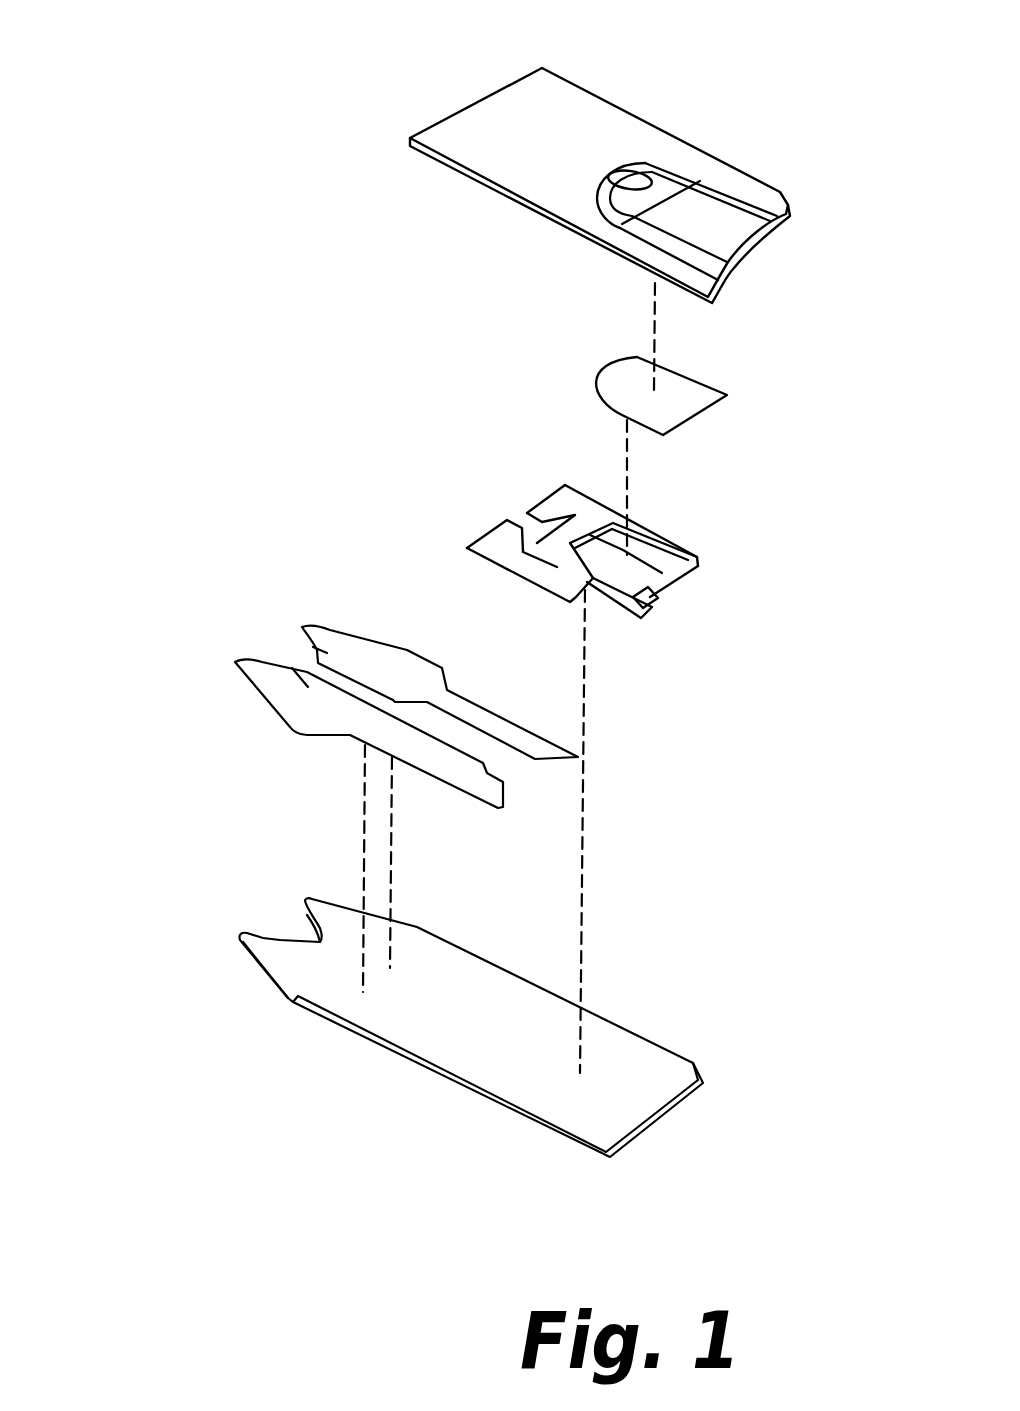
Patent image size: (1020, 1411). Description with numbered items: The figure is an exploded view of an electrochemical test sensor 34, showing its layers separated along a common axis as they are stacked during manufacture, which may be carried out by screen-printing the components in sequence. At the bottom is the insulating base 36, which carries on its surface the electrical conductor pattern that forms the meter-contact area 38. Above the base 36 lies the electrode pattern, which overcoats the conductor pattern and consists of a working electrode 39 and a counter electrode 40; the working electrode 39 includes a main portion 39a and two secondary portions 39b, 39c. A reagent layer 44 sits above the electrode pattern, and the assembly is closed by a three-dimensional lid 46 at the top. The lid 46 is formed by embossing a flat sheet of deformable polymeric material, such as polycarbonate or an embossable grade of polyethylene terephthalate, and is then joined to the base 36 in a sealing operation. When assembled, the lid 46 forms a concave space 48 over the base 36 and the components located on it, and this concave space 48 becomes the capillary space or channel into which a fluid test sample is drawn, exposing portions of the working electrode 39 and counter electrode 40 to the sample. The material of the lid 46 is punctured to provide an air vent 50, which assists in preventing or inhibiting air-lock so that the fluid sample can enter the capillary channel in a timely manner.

The electrochemical test sensor 34 is at (183, 122).
The insulating base 36 is at (693, 1067).
The meter-contact area 38 is at (258, 626).
The working electrode 39 is at (492, 545).
The main portion 39a is at (660, 598).
The secondary portion 39b is at (597, 582).
The secondary portion 39c is at (700, 563).
The counter electrode 40 is at (647, 530).
The reagent layer 44 is at (618, 378).
The lid 46 is at (502, 102).
The concave space 48 is at (766, 259).
The air vent 50 is at (630, 178).